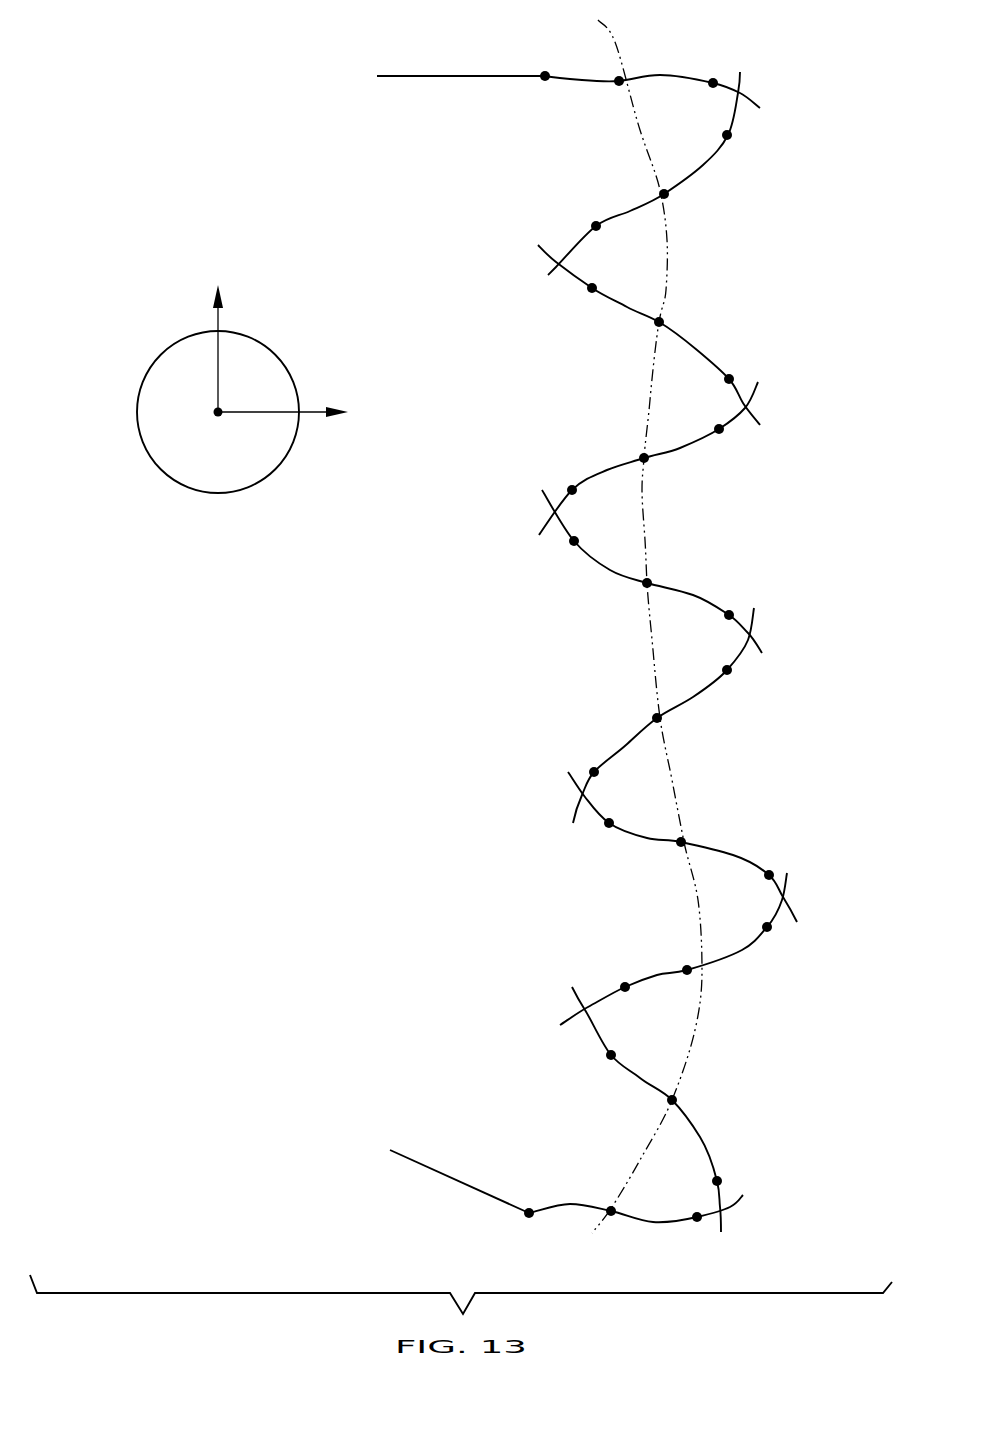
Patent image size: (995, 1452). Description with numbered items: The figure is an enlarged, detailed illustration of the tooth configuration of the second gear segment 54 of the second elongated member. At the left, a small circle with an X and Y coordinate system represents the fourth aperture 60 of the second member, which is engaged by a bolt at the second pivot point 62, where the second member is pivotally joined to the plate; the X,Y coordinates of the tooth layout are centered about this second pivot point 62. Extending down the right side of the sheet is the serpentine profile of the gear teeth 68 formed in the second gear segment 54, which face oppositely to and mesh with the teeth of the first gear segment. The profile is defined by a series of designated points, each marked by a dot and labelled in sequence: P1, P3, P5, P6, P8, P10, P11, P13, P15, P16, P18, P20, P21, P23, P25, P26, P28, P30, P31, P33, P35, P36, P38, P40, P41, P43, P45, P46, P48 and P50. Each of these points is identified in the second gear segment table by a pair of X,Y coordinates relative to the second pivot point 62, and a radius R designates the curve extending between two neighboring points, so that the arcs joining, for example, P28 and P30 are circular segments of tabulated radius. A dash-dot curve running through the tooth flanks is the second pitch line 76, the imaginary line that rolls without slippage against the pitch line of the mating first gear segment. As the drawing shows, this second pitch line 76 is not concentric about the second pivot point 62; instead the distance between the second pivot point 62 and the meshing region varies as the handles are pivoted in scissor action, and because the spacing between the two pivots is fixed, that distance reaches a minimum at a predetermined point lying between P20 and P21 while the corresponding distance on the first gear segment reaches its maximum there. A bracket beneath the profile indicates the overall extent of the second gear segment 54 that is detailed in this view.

The second gear segment 54 is at (482, 1054).
The fourth aperture 60 is at (143, 378).
The second pivot point 62 is at (254, 461).
The gear teeth 68 is at (696, 156).
The second pitch line 76 is at (613, 43).
The point P1 is at (545, 76).
The point P3 is at (619, 81).
The point P5 is at (713, 83).
The point P6 is at (727, 135).
The point P8 is at (664, 194).
The point P10 is at (596, 226).
The point P11 is at (592, 288).
The point P13 is at (659, 322).
The point P15 is at (729, 379).
The point P16 is at (719, 429).
The point P18 is at (644, 458).
The point P20 is at (572, 490).
The point P21 is at (574, 541).
The point P23 is at (647, 583).
The point P25 is at (729, 615).
The point P26 is at (798, 709).
The point P28 is at (657, 718).
The point P30 is at (594, 772).
The point P31 is at (609, 823).
The point P33 is at (681, 842).
The point P35 is at (769, 875).
The point P36 is at (767, 927).
The point P38 is at (687, 970).
The point P40 is at (625, 987).
The point P41 is at (611, 1055).
The point P43 is at (672, 1100).
The point P45 is at (717, 1181).
The point P46 is at (697, 1217).
The point P48 is at (611, 1211).
The point P50 is at (529, 1213).